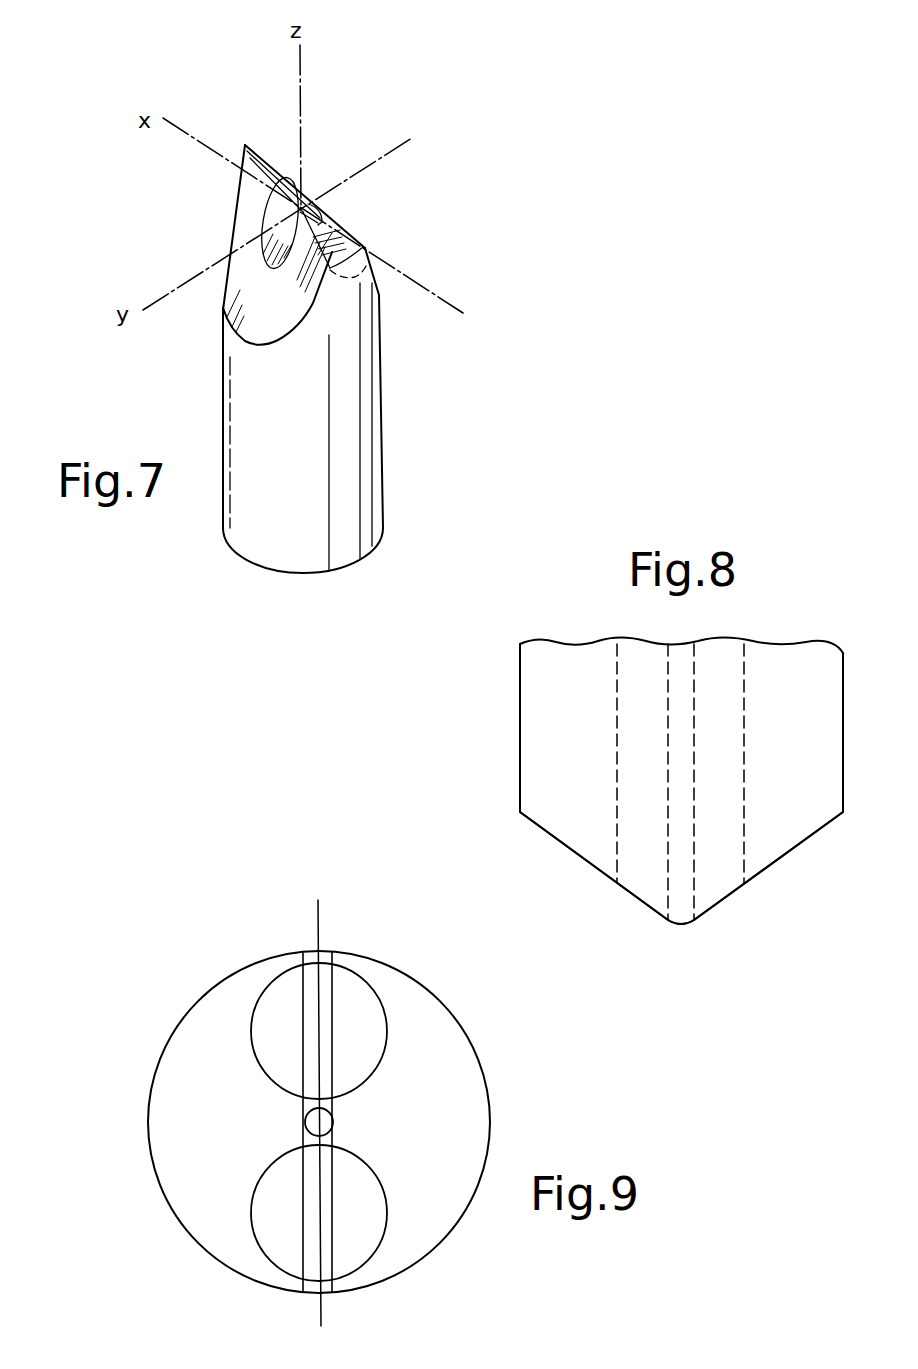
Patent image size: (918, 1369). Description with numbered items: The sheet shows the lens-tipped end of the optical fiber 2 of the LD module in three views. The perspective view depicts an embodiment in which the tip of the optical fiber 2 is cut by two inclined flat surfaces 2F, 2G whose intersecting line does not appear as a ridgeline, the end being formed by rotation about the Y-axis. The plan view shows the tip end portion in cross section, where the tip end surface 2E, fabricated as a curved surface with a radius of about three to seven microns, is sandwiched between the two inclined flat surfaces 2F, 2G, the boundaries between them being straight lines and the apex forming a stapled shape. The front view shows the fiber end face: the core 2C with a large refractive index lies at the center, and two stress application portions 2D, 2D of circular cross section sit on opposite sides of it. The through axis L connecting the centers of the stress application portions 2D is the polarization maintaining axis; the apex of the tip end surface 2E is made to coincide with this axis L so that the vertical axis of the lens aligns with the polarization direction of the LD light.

In FIG. 8, the optical fiber 2 is at (500, 686).
In FIG. 9, the optical fiber 2 is at (138, 1060).
In FIG. 9, the core 2C is at (325, 1127).
In FIG. 9, the stress application portions 2D is at (381, 1008).
In FIG. 8, the tip end surface 2E is at (670, 916).
In FIG. 8, the inclined flat surface 2F is at (586, 870).
In FIG. 8, the inclined flat surface 2G is at (753, 876).
In FIG. 9, the through axis L is at (307, 921).